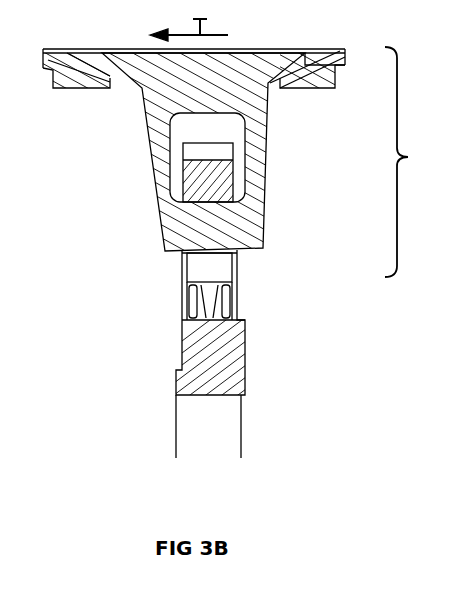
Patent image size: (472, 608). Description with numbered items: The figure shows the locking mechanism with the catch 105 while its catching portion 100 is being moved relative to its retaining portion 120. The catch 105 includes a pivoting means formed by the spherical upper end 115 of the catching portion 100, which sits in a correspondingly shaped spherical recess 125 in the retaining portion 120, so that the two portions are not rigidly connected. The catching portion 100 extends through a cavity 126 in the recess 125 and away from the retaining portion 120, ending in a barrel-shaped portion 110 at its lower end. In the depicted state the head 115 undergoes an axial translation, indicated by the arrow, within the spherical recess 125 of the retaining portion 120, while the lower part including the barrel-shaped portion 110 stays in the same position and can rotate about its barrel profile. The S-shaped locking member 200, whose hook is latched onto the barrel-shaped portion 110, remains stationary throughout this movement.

The catching portion 100 is at (270, 166).
The catch 105 is at (417, 162).
The barrel-shaped portion 110 is at (240, 235).
The spherical upper end 115 is at (270, 86).
The retaining portion 120 is at (348, 60).
The spherical recess 125 is at (338, 52).
The cavity 126 is at (122, 90).
The locking member 200 is at (247, 393).